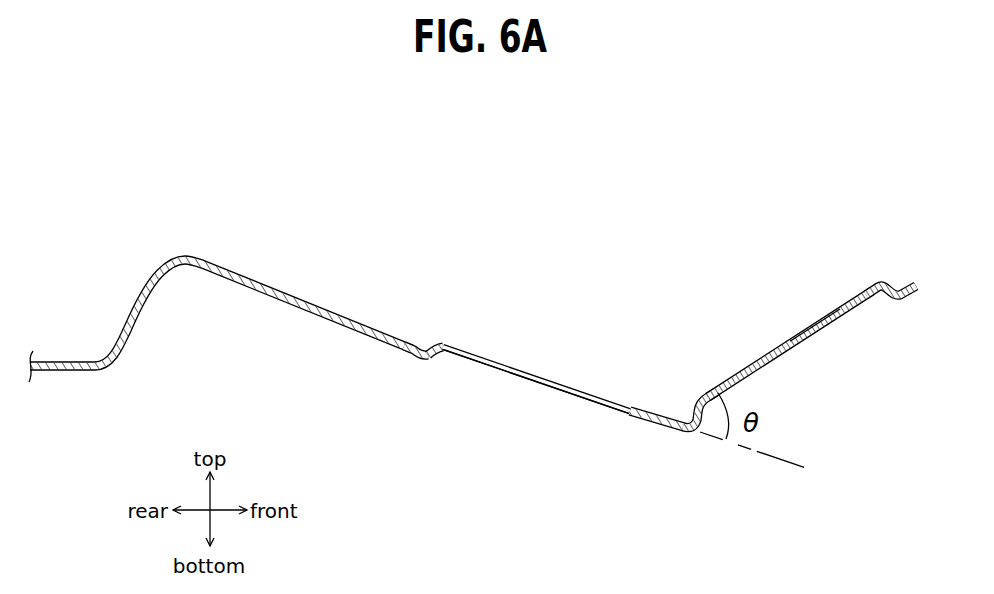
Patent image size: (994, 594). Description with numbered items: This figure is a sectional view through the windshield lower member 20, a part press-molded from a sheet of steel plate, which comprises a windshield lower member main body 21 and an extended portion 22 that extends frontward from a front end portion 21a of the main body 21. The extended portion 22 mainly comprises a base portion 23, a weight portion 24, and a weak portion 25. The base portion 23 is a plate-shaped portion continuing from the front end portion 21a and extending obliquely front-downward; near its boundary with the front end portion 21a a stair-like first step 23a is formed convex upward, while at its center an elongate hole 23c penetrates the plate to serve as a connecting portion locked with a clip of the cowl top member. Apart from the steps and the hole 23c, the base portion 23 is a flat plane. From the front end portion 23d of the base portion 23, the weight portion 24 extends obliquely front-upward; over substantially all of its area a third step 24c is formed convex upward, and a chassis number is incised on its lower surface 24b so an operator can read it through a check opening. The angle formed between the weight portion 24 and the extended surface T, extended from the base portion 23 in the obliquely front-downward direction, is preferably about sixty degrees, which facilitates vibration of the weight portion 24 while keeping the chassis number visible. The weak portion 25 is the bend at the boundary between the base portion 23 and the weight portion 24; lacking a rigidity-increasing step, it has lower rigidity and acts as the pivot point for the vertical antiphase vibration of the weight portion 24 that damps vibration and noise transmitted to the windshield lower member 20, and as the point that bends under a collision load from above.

The windshield lower member 20 is at (538, 197).
The windshield lower member main body 21 is at (180, 254).
The front end portion 21a is at (413, 345).
The extended portion 22 is at (644, 325).
The base portion 23 is at (456, 357).
The first step 23a is at (431, 343).
The elongate hole 23c is at (617, 420).
The front end portion of the base portion 23d is at (638, 412).
The weight portion 24 is at (795, 350).
The lower surface 24b is at (833, 320).
The third step 24c is at (818, 323).
The weak portion 25 is at (681, 421).
The extended surface T is at (780, 464).